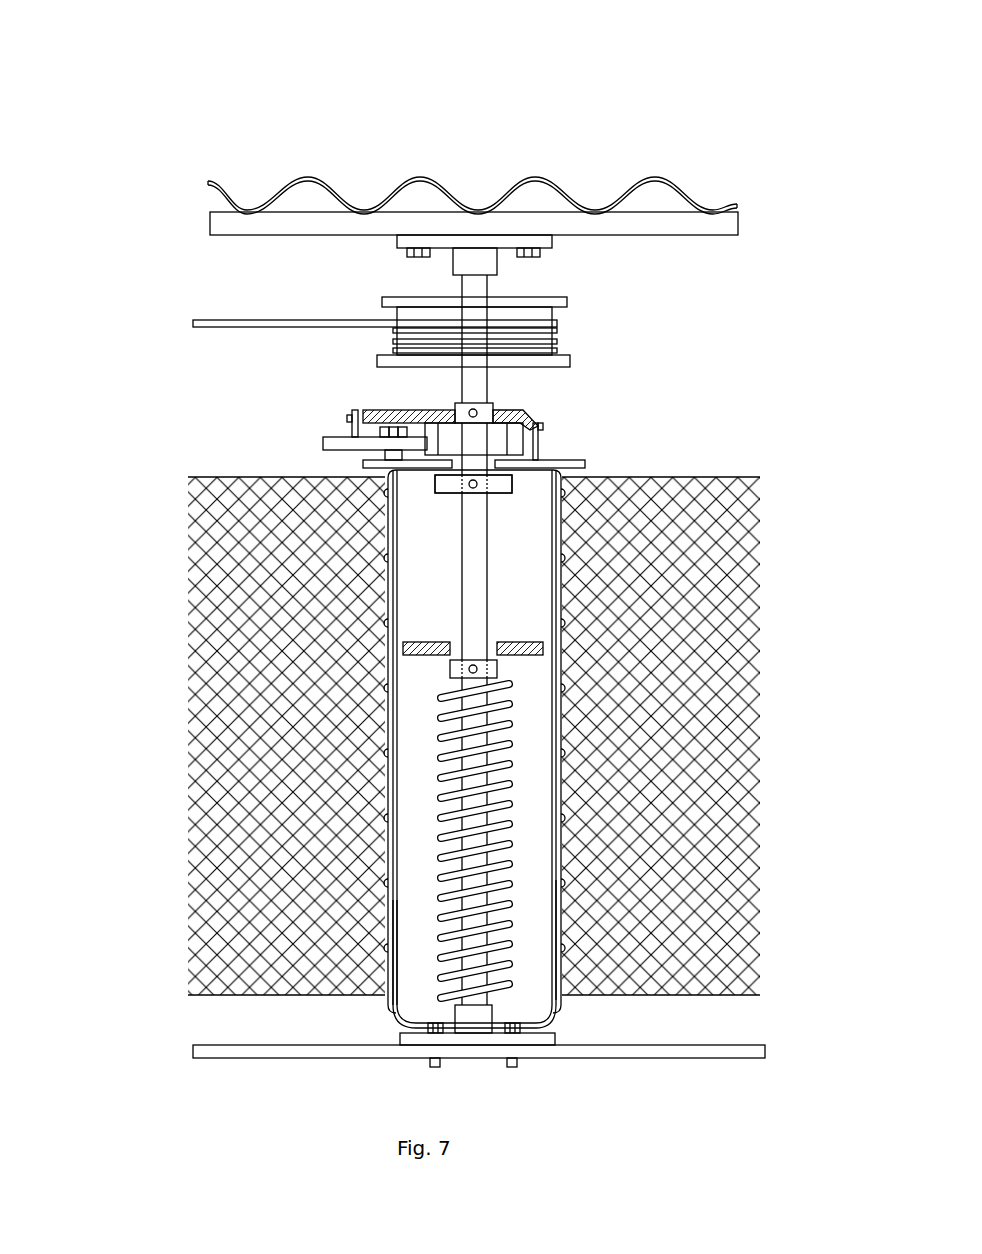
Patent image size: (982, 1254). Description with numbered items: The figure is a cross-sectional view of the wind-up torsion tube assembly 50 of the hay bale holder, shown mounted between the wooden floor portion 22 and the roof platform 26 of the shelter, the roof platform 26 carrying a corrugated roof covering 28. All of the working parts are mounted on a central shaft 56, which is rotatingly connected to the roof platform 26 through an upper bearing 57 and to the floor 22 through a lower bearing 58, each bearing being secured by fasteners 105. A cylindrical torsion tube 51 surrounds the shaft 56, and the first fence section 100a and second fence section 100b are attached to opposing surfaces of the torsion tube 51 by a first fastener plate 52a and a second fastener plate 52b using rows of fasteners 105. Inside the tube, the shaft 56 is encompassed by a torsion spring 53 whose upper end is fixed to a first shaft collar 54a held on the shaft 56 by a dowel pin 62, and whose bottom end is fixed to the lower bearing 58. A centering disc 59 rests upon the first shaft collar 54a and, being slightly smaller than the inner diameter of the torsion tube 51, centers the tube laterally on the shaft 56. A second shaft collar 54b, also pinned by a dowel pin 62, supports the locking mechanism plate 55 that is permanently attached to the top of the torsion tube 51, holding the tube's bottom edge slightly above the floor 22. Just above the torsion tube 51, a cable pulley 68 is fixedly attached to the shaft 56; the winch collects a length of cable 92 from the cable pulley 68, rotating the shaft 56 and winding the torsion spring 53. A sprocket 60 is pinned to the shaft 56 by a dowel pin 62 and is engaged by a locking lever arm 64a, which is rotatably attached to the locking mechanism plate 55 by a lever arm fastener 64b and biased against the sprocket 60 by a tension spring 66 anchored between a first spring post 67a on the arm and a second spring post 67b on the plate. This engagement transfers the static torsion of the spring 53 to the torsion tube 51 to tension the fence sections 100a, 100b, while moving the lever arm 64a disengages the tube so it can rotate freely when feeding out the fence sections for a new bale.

The wind-up torsion tube assembly 50 is at (118, 155).
The floor portion 22 is at (257, 1060).
The roof platform 26 is at (660, 222).
The roof covering 28 is at (547, 177).
The torsion tube 51 is at (397, 953).
The first fastener plate 52a is at (560, 667).
The second fastener plate 52b is at (395, 906).
The torsion spring 53 is at (440, 811).
The first shaft collar 54a is at (543, 650).
The second shaft collar 54b is at (437, 486).
The locking mechanism plate 55 is at (363, 463).
The shaft 56 is at (474, 286).
The upper bearing 57 is at (458, 255).
The lower bearing 58 is at (505, 1038).
The centering disc 59 is at (558, 605).
The sprocket 60 is at (430, 435).
The dowel pin 62 is at (463, 405).
The locking lever arm 64a is at (323, 445).
The lever arm fastener 64b is at (373, 430).
The tension spring 66 is at (365, 412).
The first spring post 67a is at (352, 425).
The second spring post 67b is at (538, 420).
The cable pulley 68 is at (567, 302).
The cable 92 is at (310, 317).
The first fence section 100a is at (697, 832).
The second fence section 100b is at (290, 862).
The fasteners 105 is at (410, 250).